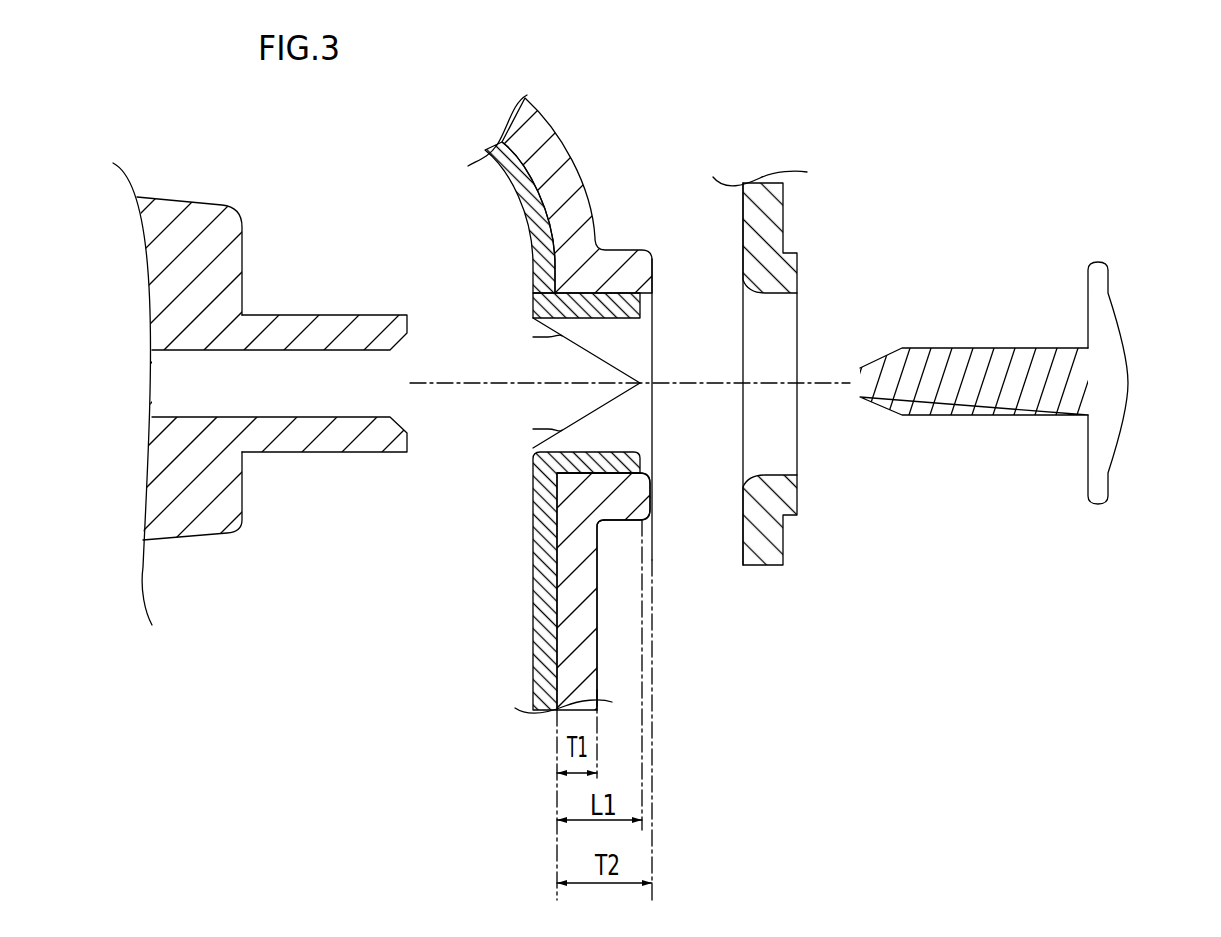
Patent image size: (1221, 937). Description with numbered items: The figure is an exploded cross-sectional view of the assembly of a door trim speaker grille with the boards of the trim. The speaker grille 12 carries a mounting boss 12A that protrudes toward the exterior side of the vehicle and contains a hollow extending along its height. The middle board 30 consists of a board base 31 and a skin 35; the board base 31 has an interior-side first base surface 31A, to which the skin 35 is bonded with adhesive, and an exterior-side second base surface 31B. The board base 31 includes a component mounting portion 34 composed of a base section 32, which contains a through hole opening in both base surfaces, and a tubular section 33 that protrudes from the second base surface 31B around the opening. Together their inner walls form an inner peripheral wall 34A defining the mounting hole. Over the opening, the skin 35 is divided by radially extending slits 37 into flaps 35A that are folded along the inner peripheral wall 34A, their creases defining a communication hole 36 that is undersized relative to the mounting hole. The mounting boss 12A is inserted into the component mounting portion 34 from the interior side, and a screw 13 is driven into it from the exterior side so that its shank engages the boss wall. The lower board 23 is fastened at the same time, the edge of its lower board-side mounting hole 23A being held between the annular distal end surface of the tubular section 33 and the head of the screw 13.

The speaker grille 12 is at (457, 400).
The mounting boss 12A is at (317, 455).
The screw 13 is at (1120, 379).
The lower board 23 is at (806, 359).
The lower board-side mounting hole 23A is at (777, 294).
The middle board 30 is at (610, 400).
The board base 31 is at (610, 400).
The first base surface 31A is at (557, 628).
The second base surface 31B is at (597, 603).
The base section 32 is at (575, 500).
The tubular section 33 is at (633, 497).
The component mounting portion 34 is at (671, 479).
The inner peripheral wall 34A is at (637, 427).
The skin 35 is at (505, 162).
The flap 35A is at (637, 307).
The communication hole 36 is at (533, 320).
The slit 37 is at (547, 339).